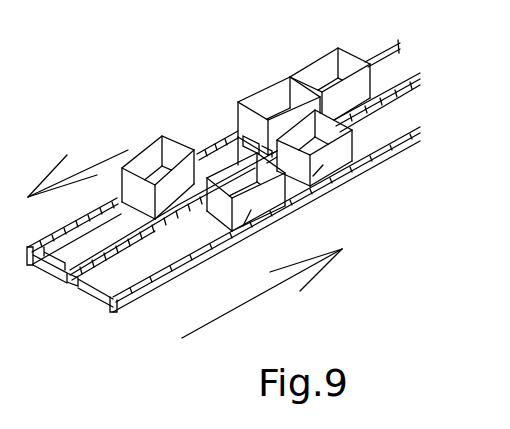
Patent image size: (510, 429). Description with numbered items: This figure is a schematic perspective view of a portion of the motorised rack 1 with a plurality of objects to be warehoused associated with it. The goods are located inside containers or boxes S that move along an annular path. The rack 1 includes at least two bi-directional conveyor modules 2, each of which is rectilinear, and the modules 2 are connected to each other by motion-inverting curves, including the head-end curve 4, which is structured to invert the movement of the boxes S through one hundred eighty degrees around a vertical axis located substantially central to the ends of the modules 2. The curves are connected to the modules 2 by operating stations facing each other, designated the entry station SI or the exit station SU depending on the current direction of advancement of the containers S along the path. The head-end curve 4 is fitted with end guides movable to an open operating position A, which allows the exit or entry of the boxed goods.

The motorised rack 1 is at (87, 302).
The bi-directional conveyor module 2 is at (70, 280).
The head-end curve 4 is at (208, 135).
The open operating position A is at (128, 154).
The containers or boxes S is at (183, 175).
The entry station SI is at (233, 123).
The exit station SU is at (358, 144).